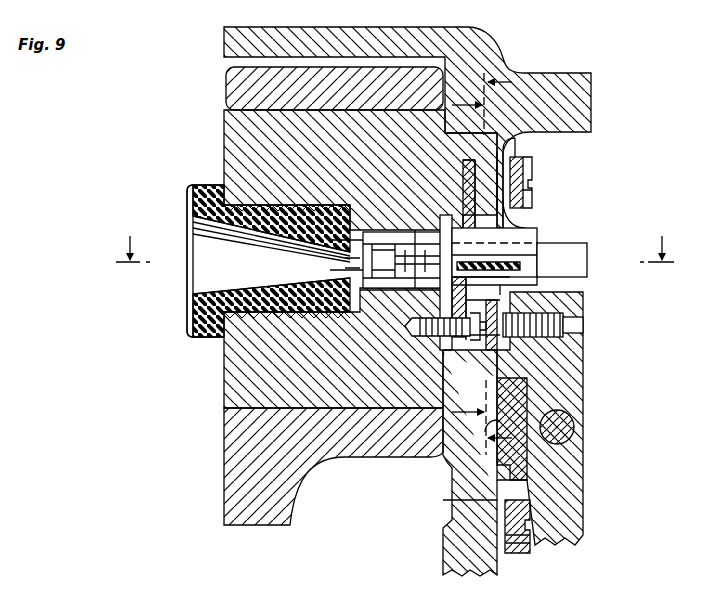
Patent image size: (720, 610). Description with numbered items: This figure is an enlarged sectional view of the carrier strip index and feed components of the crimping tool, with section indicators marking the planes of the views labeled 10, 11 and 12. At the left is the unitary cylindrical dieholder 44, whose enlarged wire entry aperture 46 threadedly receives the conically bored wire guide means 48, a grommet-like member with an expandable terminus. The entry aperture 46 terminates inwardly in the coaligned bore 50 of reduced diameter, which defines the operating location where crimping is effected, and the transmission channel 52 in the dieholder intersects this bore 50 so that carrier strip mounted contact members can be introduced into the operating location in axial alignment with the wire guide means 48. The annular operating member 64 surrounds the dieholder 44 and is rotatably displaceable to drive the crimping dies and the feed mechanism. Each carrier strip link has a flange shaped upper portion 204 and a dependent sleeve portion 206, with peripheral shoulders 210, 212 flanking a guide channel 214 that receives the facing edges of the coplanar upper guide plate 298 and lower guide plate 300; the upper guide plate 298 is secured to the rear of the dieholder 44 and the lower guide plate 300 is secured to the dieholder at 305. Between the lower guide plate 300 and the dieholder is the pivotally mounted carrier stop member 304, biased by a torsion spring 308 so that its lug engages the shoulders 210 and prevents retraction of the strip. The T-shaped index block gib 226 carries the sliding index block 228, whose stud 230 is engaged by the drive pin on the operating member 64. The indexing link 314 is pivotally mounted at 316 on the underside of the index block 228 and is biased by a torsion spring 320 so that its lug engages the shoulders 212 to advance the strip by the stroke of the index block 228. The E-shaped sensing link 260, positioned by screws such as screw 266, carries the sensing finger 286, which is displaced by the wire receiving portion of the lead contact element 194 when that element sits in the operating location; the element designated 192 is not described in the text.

The operating member 64 is at (248, 80).
The dieholder 44 is at (236, 143).
The wire guide means 48 is at (195, 292).
The wire entry aperture 46 is at (300, 317).
The lead carrier strip mounted contact element 194 is at (345, 265).
The sensing finger 286 is at (342, 198).
The bore 50 is at (388, 234).
The flange shaped upper portion 204 is at (417, 226).
The peripheral shoulder 210 is at (446, 212).
The transmission channel 52 is at (372, 322).
The carrier stop member 304 is at (458, 292).
The securing point of lower guide plate to dieholder 305 is at (455, 337).
The torsion spring 308 is at (470, 355).
The lower guide plate 300 is at (470, 368).
The upper guide plate 298 is at (523, 188).
The screw 266 is at (535, 200).
The guide channel 214 is at (530, 230).
The peripheral shoulder 212 is at (523, 262).
The bore 192 is at (540, 262).
The sleeve portion 206 is at (588, 250).
The indexing link 314 is at (515, 290).
The torsion spring 320 is at (548, 313).
The pivot point 316 is at (565, 326).
The index block member 228 is at (582, 385).
The stud 230 is at (575, 427).
The index block gib 226 is at (527, 458).
The E-shaped sensing link 260 is at (530, 548).
The section line 10 is at (500, 260).
The section line 11 is at (469, 264).
The section line 12 is at (395, 261).